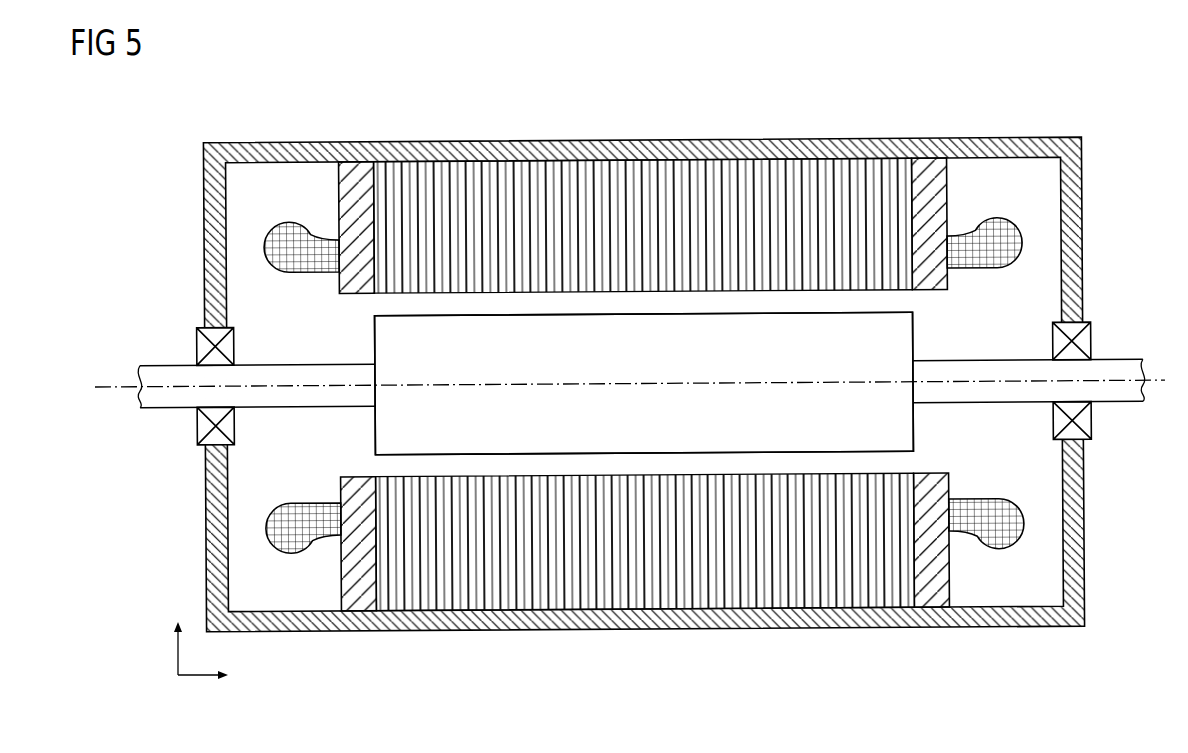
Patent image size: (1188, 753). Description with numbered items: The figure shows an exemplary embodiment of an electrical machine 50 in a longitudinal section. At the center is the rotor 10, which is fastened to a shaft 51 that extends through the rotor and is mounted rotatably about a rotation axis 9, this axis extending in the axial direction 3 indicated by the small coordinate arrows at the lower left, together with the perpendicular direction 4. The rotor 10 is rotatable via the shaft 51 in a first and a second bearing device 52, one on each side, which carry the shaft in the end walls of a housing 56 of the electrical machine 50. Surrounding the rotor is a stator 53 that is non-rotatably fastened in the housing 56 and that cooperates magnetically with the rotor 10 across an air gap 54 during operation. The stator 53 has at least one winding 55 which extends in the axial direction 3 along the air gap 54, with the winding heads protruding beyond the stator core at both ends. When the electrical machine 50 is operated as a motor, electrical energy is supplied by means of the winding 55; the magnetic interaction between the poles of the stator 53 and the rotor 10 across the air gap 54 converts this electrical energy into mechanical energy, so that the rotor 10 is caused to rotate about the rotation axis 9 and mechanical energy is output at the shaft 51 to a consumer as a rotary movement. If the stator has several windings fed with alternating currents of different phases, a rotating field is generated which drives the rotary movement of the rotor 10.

The electrical machine 50 is at (962, 64).
The shaft 51 is at (165, 377).
The bearing device 52 is at (202, 426).
The stator 53 is at (500, 178).
The air gap 54 is at (527, 305).
The winding 55 is at (292, 265).
The housing 56 is at (290, 508).
The rotor 10 is at (373, 337).
The rotation axis 9 is at (105, 387).
The axial direction 3 is at (200, 677).
The radial direction 4 is at (178, 652).